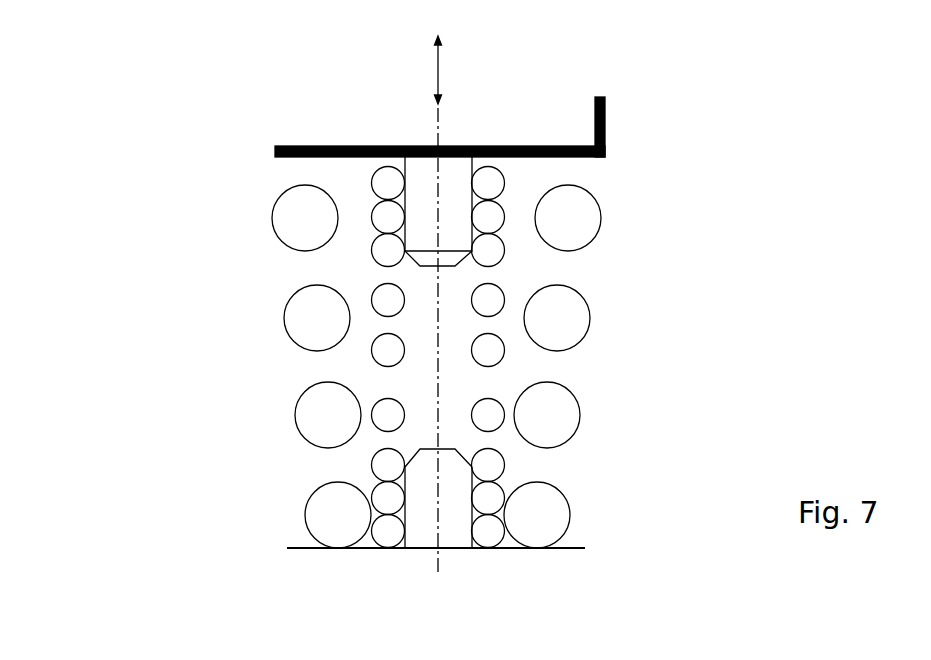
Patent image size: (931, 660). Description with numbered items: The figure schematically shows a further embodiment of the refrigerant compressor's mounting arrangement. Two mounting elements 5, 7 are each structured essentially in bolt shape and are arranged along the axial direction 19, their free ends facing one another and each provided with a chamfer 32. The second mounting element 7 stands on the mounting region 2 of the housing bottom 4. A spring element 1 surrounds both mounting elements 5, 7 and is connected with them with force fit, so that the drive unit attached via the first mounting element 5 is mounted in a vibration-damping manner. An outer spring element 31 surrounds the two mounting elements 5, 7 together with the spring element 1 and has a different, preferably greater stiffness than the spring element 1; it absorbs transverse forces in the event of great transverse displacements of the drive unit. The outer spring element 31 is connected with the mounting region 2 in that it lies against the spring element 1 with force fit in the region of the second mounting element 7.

The spring element 1 is at (390, 348).
The mounting region 2 is at (316, 501).
The housing bottom 4 is at (293, 548).
The first mounting element 5 is at (457, 223).
The second mounting element 7 is at (450, 530).
The axial direction 19 is at (437, 70).
The outer spring element 31 is at (293, 218).
The chamfer 32 is at (415, 265).